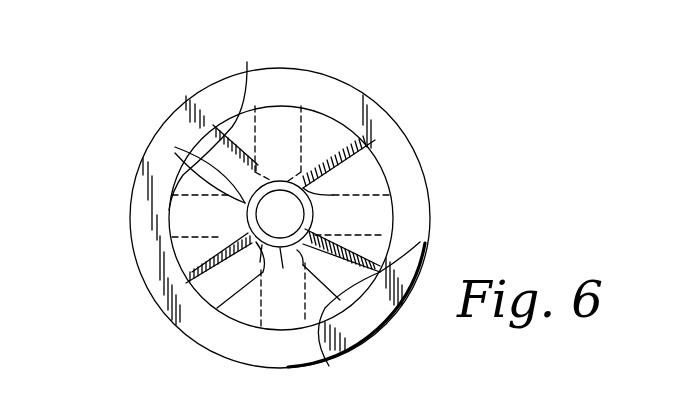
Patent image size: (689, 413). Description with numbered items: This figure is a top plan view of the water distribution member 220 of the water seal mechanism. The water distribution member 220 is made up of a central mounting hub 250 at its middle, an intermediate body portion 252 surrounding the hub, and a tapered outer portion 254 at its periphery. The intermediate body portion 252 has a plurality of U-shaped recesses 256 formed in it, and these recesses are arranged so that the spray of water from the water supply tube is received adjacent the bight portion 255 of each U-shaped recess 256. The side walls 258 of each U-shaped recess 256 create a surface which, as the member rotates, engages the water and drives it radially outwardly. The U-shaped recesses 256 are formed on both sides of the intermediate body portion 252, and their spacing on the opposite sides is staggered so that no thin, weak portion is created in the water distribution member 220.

The water distribution member 220 is at (168, 97).
The central mounting hub 250 is at (312, 217).
The intermediate body portion 252 is at (312, 132).
The tapered outer portion 254 is at (288, 85).
The bight portion 255 is at (175, 147).
The U-shaped recess 256 is at (191, 168).
The side walls 258 is at (294, 212).